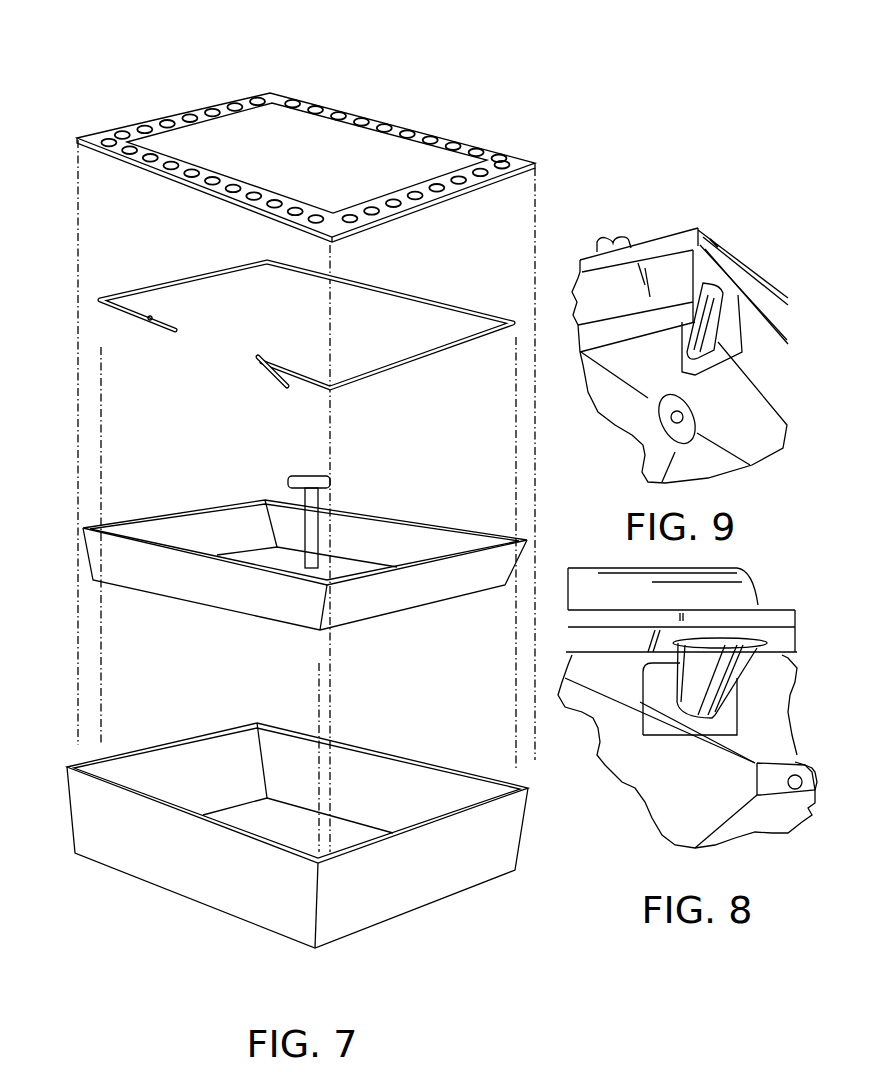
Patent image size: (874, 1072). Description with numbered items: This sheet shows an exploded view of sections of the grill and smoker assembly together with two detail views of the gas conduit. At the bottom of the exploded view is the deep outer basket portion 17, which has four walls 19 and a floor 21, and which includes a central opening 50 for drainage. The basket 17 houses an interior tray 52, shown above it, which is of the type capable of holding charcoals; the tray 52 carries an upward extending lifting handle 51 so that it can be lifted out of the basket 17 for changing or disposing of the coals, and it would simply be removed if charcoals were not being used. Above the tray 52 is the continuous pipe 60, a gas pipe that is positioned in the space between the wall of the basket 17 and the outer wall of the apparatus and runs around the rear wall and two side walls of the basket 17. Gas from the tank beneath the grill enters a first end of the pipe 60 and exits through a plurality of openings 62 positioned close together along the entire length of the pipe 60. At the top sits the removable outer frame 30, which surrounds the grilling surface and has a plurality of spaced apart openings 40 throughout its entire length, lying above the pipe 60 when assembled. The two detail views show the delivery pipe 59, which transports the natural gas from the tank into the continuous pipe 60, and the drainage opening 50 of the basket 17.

In FIG. 7, the outer basket portion 17 is at (297, 844).
In FIG. 7, the walls 19 is at (188, 763).
In FIG. 7, the floor 21 is at (265, 817).
In FIG. 7, the frame 30 is at (91, 135).
In FIG. 7, the openings 40 is at (178, 167).
In FIG. 7, the lifting handle 51 is at (306, 477).
In FIG. 7, the interior tray 52 is at (352, 627).
In FIG. 9, the delivery pipe 59 is at (727, 305).
In FIG. 8, the delivery pipe 59 is at (702, 658).
In FIG. 9, the central opening 50 is at (668, 415).
In FIG. 7, the continuous pipe 60 is at (483, 312).
In FIG. 7, the openings 62 is at (187, 275).